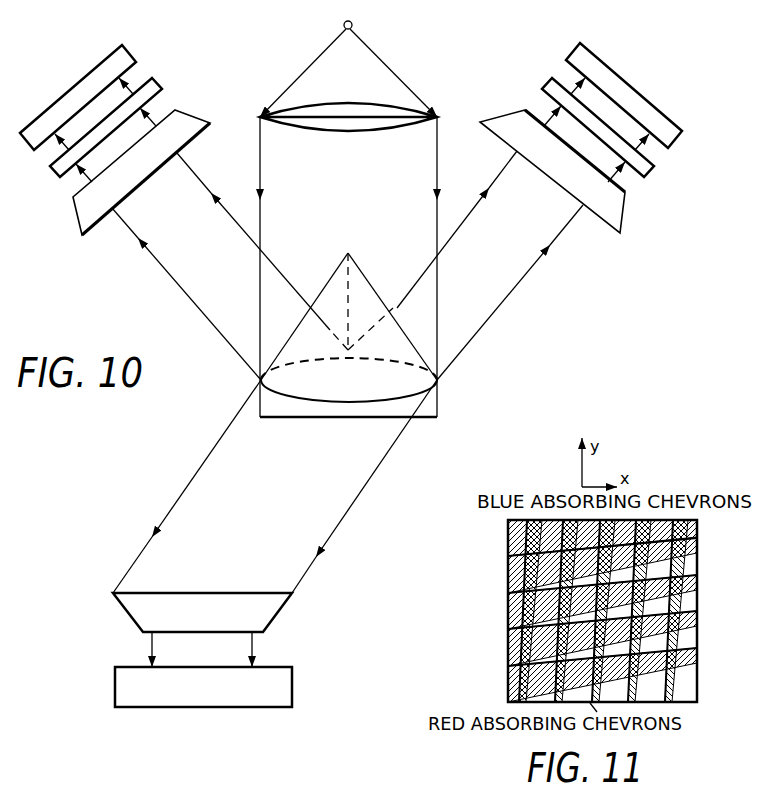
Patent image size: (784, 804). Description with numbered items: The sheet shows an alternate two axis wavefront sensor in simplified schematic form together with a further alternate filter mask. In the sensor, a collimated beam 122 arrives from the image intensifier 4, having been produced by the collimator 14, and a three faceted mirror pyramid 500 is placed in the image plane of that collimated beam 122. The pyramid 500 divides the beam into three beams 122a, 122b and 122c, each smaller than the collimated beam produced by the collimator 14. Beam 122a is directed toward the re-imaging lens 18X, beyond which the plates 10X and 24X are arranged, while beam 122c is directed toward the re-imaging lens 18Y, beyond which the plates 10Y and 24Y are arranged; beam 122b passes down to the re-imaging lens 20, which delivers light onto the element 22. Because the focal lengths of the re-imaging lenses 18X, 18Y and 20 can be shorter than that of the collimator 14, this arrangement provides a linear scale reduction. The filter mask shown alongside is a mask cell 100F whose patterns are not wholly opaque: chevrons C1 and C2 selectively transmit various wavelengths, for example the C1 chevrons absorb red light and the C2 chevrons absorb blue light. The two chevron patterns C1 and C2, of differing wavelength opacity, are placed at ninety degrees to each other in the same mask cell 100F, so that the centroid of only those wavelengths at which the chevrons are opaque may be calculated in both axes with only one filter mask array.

In FIG. 10, the image intensifier 4 is at (431, 67).
In FIG. 10, the collimator 14 is at (410, 115).
In FIG. 10, the collimated beam 122 is at (438, 182).
In FIG. 10, the three faceted mirror pyramid 500 is at (415, 352).
In FIG. 10, the beam 122a is at (168, 272).
In FIG. 10, the beam 122b is at (358, 498).
In FIG. 10, the beam 122c is at (510, 295).
In FIG. 10, the re-imaging lens 18X is at (200, 115).
In FIG. 10, the X filter plate 10X is at (160, 89).
In FIG. 10, the X detector plate 24X is at (134, 62).
In FIG. 10, the re-imaging lens 18Y is at (625, 218).
In FIG. 10, the Y filter plate 10Y is at (652, 165).
In FIG. 10, the Y detector plate 24Y is at (680, 137).
In FIG. 10, the re-imaging lens 20 is at (202, 612).
In FIG. 10, the detector 22 is at (203, 687).
In FIG. 11, the mask cell 100F is at (630, 605).
In FIG. 11, the chevrons C1 is at (662, 542).
In FIG. 11, the chevrons C2 is at (678, 549).